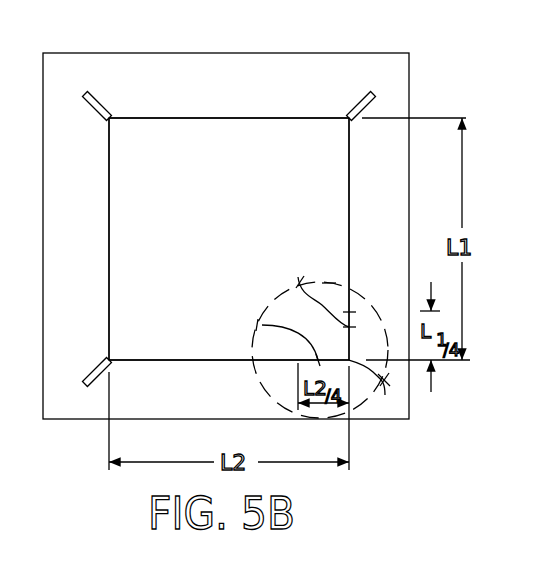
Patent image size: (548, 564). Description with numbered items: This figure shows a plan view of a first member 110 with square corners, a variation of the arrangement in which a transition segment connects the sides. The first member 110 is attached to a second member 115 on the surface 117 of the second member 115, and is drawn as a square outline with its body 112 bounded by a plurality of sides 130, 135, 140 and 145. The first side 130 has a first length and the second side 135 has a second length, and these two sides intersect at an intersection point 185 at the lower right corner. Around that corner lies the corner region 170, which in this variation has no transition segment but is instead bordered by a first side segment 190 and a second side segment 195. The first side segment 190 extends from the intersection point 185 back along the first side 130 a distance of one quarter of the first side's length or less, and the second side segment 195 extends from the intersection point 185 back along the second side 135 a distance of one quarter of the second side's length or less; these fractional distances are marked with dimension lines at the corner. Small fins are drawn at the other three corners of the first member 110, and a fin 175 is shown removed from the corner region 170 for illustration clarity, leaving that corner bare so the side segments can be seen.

The surface 117 is at (135, 68).
The first member 110 is at (234, 182).
The side 145 is at (192, 120).
The body 112 is at (283, 130).
The second member 115 is at (90, 152).
The side 140 is at (109, 218).
The first side 130 is at (348, 183).
The corner region 170 is at (328, 283).
The first side segment 190 is at (300, 280).
The second side segment 195 is at (262, 325).
The fin 175 is at (88, 368).
The second side 135 is at (148, 360).
The intersection point 185 is at (385, 395).